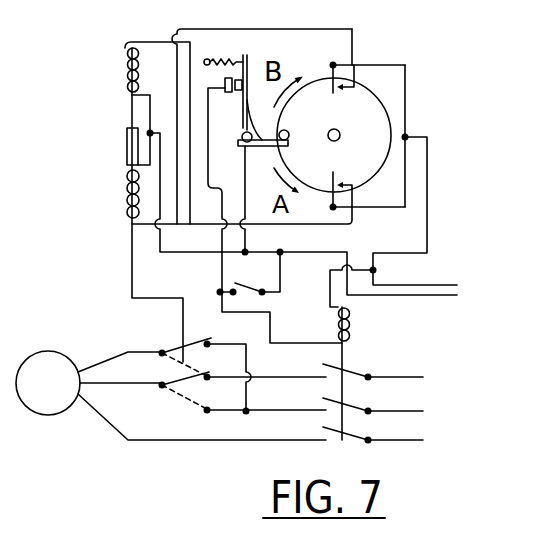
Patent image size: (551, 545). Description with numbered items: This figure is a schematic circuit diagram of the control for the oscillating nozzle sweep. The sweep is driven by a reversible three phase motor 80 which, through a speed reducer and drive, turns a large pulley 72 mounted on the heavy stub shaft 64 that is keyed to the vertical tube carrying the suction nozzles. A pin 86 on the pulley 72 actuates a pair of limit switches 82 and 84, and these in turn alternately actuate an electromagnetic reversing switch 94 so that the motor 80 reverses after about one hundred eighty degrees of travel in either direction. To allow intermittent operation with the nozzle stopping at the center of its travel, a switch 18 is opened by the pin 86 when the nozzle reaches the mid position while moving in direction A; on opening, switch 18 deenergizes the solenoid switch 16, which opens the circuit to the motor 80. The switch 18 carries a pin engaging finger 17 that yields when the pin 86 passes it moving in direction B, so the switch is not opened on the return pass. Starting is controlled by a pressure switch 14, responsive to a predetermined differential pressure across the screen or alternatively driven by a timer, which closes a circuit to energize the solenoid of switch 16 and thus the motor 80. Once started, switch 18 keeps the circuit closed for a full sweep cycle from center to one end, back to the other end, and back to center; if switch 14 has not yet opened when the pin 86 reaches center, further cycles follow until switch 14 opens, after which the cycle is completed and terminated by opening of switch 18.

The pressure switch 14 is at (236, 282).
The solenoid switch 16 is at (352, 345).
The pin engaging finger 17 is at (271, 148).
The switch 18 is at (250, 80).
The stub shaft 64 is at (340, 131).
The large pulley 72 is at (388, 113).
The reversible motor 80 is at (60, 352).
The limit switch 82 is at (347, 80).
The limit switch 84 is at (338, 190).
The pin 86 is at (290, 134).
The electromagnetic reversing switch 94 is at (190, 360).